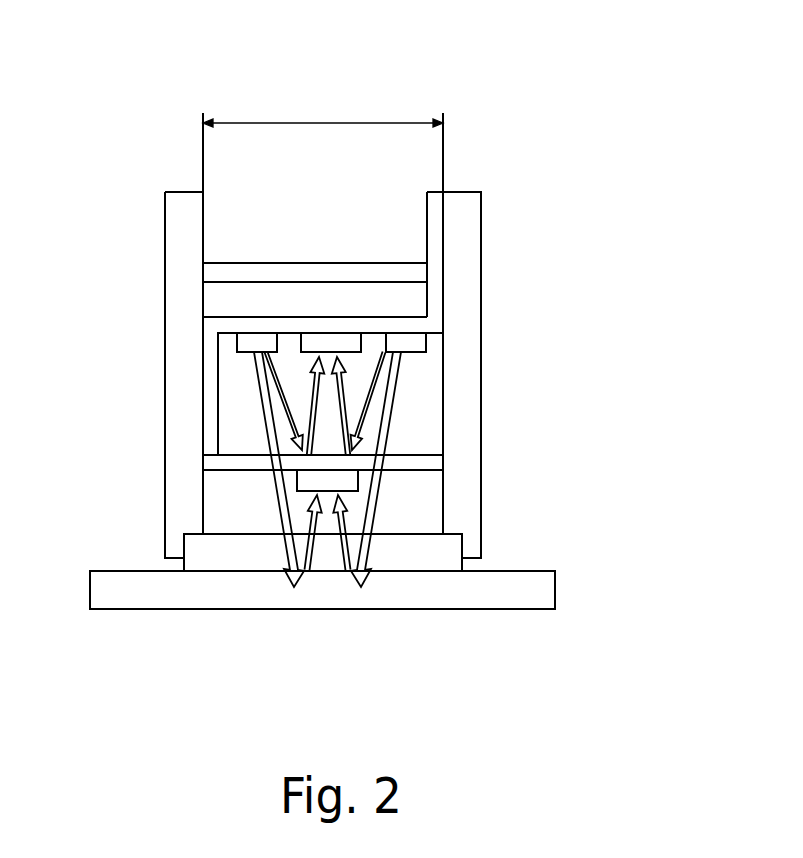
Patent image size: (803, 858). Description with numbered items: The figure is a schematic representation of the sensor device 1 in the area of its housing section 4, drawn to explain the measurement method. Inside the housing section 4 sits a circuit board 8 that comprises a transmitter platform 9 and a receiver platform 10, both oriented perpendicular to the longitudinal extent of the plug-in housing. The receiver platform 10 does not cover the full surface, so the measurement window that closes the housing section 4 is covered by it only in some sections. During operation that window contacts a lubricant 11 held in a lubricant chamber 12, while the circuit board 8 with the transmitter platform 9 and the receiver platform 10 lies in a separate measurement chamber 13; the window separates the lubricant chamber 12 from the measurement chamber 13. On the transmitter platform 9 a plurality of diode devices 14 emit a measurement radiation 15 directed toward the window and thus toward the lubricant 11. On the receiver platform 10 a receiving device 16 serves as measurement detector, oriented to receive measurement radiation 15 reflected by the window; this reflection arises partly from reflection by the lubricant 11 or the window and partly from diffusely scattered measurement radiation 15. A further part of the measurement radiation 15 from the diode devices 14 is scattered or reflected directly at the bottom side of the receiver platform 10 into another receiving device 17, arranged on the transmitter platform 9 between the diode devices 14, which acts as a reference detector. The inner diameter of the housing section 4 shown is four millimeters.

The sensor device 1 is at (115, 117).
The housing section 4 is at (642, 192).
The circuit board 8 is at (437, 208).
The transmitter platform 9 is at (413, 326).
The receiver platform 10 is at (432, 465).
The lubricant 11 is at (382, 589).
The lubricant chamber 12 is at (282, 664).
The measurement chamber 13 is at (224, 438).
The diode devices 14 is at (244, 343).
The measurement radiation 15 is at (258, 394).
The receiving device 16 is at (345, 484).
The receiving device 17 is at (328, 346).